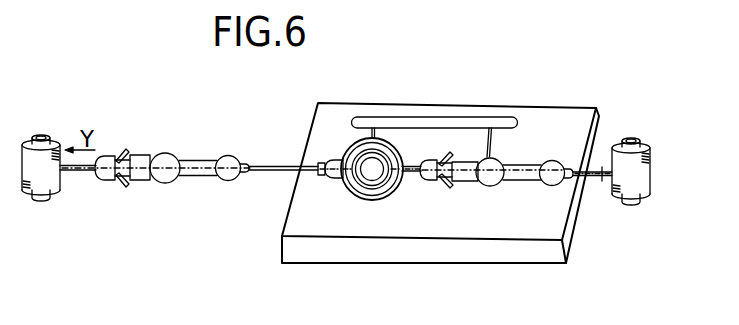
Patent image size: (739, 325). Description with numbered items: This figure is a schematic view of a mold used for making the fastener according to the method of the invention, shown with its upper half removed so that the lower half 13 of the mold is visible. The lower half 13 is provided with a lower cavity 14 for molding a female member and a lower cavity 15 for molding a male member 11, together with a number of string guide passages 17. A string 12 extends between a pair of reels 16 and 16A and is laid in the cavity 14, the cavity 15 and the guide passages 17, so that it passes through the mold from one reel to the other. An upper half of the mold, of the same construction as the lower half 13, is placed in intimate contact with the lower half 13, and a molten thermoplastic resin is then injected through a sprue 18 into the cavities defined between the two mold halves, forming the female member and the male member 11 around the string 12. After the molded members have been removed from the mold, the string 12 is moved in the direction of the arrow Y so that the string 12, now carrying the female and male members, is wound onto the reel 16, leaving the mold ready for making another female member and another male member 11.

The male member 11 is at (141, 153).
The string 12 is at (263, 163).
The lower half of the mold 13 is at (281, 238).
The lower cavity 14 is at (364, 201).
The lower cavity 15 is at (483, 188).
The reel 16 is at (59, 143).
The reel 16A is at (651, 189).
The string guide passage 17 is at (318, 174).
The sprue 18 is at (462, 120).